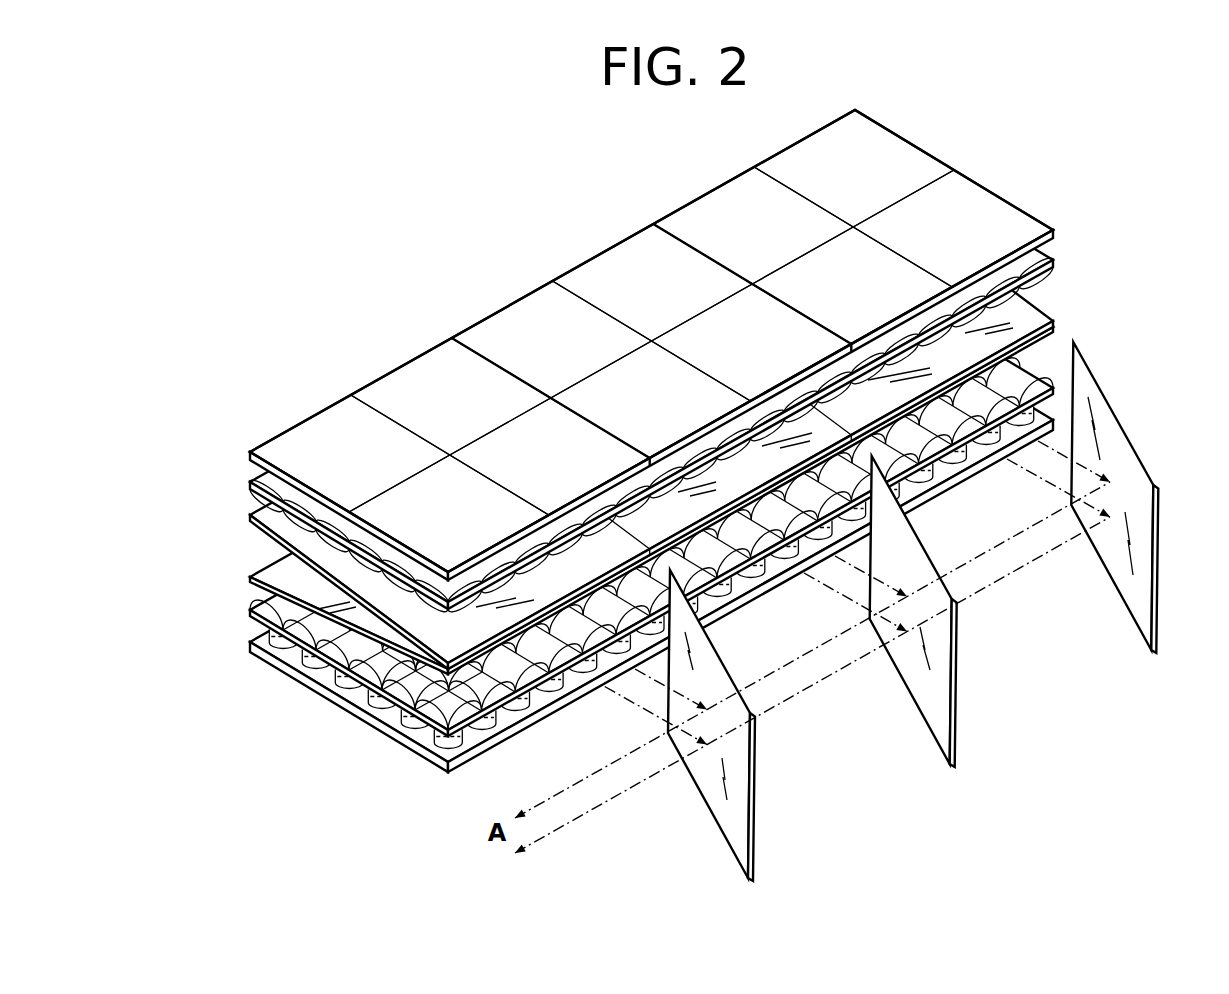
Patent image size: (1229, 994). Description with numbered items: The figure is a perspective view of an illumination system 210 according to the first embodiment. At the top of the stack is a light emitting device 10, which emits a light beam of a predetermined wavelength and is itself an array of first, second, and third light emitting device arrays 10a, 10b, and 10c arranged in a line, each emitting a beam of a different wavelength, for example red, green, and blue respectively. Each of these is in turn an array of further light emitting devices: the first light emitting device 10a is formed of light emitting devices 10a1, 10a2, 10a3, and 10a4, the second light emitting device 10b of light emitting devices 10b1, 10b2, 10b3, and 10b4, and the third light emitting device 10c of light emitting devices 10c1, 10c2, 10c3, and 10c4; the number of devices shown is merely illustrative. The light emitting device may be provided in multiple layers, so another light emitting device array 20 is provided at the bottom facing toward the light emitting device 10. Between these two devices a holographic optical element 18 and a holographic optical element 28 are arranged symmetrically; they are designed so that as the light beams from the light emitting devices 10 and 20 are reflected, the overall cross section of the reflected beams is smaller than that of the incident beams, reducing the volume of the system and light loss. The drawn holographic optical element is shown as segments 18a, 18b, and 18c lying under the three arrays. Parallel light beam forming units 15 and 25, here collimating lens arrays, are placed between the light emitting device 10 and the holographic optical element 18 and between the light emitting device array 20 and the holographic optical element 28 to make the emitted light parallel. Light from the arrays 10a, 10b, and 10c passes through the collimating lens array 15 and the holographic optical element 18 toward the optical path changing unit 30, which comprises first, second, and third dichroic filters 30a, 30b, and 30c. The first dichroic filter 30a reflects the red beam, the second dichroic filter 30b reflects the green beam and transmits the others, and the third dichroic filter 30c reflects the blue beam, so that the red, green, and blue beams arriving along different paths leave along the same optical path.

The light emitting device 10 is at (669, 343).
The first light emitting device array 10a is at (450, 453).
The second light emitting device array 10b is at (652, 339).
The third light emitting device array 10c is at (853, 225).
The light emitting device 10a1 is at (328, 467).
The light emitting device 10a2 is at (424, 409).
The light emitting device 10a3 is at (422, 509).
The light emitting device 10a4 is at (518, 469).
The light emitting device 10b1 is at (519, 352).
The light emitting device 10b2 is at (623, 294).
The light emitting device 10b3 is at (616, 394).
The light emitting device 10b4 is at (721, 352).
The light emitting device 10c1 is at (721, 234).
The light emitting device 10c2 is at (824, 180).
The light emitting device 10c3 is at (821, 294).
The light emitting device 10c4 is at (907, 237).
The parallel light beam forming unit 15 is at (250, 483).
The holographic optical element 18 is at (629, 421).
The first light guide plate 18a is at (533, 592).
The second light guide plate 18b is at (727, 479).
The third light guide plate 18c is at (928, 369).
The holographic optical element 28 is at (261, 577).
The parallel light beam forming unit 25 is at (250, 611).
The light emitting device array 20 is at (250, 643).
The optical path changing unit 30 is at (913, 624).
The first dichroic filter 30a is at (750, 850).
The second dichroic filter 30b is at (943, 767).
The third dichroic filter 30c is at (1143, 625).
The illumination system 210 is at (568, 533).